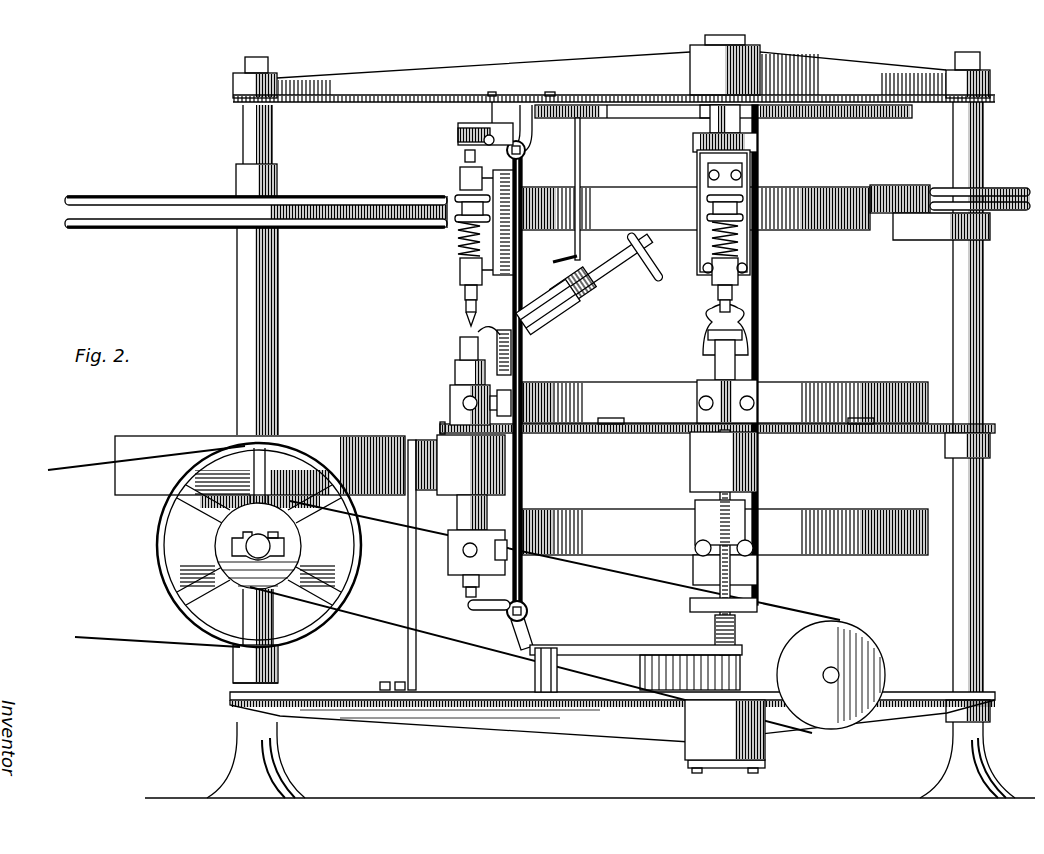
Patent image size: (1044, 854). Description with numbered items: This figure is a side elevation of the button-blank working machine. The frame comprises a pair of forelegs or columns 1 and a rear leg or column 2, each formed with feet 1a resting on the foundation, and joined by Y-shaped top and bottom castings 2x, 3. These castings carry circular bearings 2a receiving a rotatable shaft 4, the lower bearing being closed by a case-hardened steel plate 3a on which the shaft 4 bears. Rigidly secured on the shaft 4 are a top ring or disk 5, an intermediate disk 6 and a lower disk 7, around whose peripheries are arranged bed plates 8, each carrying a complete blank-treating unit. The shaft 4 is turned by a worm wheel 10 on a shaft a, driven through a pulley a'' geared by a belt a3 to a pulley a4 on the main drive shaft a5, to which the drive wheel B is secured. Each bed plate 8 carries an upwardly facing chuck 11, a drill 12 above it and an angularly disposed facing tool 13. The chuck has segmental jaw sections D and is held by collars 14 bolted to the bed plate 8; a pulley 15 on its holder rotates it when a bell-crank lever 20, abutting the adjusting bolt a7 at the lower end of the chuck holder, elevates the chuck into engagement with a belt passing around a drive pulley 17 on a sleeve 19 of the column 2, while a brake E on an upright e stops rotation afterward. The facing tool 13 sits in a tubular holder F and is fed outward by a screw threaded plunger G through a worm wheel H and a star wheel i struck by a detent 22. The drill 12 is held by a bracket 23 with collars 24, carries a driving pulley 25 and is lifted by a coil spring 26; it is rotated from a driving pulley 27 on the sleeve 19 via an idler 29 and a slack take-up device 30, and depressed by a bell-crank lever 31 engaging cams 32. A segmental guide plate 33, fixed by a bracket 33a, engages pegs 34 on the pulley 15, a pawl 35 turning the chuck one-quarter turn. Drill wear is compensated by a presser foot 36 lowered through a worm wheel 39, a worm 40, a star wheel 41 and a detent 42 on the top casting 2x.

The forelegs or columns 1 is at (965, 603).
The feet 1a is at (955, 755).
The rear leg or column 2 is at (270, 156).
The circular bearings 2a is at (662, 752).
The top casting 2x is at (614, 77).
The bottom casting 3 is at (874, 716).
The case-hardened steel plate 3a is at (722, 768).
The rotatable shaft 4 is at (700, 518).
The top ring or disk 5 is at (645, 188).
The central or intermediate ring or disk 6 is at (725, 402).
The lower ring or disk 7 is at (608, 520).
The bed plates 8 is at (700, 580).
The worm wheel 10 is at (645, 672).
The chuck 11 is at (715, 350).
The drill 12 is at (720, 308).
The facing tool 13 is at (472, 324).
The collars 14 is at (748, 386).
The pulley 15 is at (758, 468).
The drive pulley 17 is at (186, 437).
The sleeve 19 is at (246, 500).
The bell-crank lever 20 is at (715, 630).
The detent 22 is at (575, 250).
The bracket 23 is at (505, 210).
The bearings or collars 24 is at (712, 280).
The driving pulley 25 is at (713, 208).
The coil spring 26 is at (738, 242).
The driving pulley 27 is at (205, 192).
The idler 29 is at (1003, 196).
The adjustable slack take-up device 30 is at (898, 178).
The bell-crank lever 31 is at (758, 146).
The cams 32 is at (815, 119).
The segmental guide plate 33 is at (715, 478).
The bracket 33a is at (988, 432).
The pegs 34 is at (440, 425).
The pawl 35 is at (862, 440).
The presser foot 36 is at (465, 154).
The worm wheel 39 is at (758, 152).
The worm 40 is at (489, 145).
The star wheel 41 is at (486, 124).
The detent 42 is at (498, 115).
The shaft a is at (819, 675).
The pulley a'' is at (839, 667).
The belt a3 is at (655, 584).
The pulley a4 is at (230, 550).
The main drive shaft a5 is at (258, 536).
The pipe a7 is at (466, 604).
The drive wheel or pulley B is at (160, 548).
The hub pulley b is at (252, 478).
The segmental jaw sections D is at (748, 362).
The brake E is at (430, 446).
The upright e is at (408, 576).
The tubular holder F is at (560, 320).
The screw threaded plunger G is at (620, 258).
The worm wheel H is at (556, 284).
The star wheel i is at (552, 262).